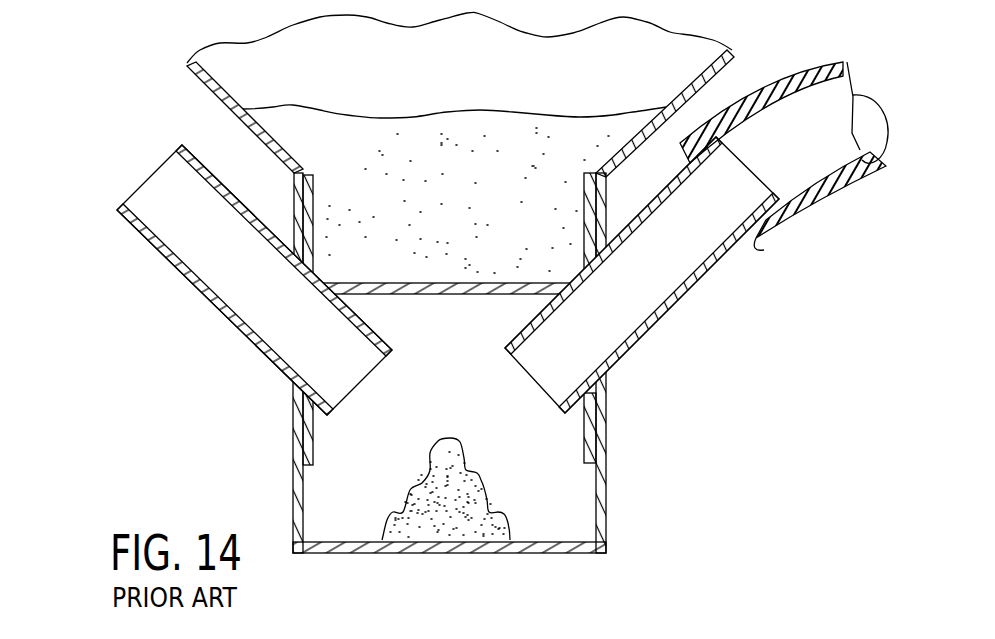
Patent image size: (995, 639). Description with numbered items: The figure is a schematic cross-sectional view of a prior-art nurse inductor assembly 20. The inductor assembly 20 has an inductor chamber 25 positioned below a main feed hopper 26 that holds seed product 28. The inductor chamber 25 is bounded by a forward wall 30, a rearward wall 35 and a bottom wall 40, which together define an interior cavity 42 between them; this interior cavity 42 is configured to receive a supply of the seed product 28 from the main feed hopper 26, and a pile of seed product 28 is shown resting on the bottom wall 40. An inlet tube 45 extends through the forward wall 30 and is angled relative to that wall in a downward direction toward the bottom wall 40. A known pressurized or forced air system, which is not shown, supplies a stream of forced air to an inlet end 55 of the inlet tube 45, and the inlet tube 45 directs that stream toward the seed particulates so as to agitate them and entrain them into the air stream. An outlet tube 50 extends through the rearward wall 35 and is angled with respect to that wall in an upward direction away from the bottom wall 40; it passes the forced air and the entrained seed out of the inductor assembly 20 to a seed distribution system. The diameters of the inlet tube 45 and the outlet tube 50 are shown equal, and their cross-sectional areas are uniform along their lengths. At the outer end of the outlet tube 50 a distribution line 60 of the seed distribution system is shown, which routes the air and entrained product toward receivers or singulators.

The nurse inductor assembly 20 is at (766, 72).
The inductor chamber 25 is at (462, 450).
The main feed hopper 26 is at (215, 92).
The seed product 28 is at (467, 197).
The forward wall 30 is at (291, 467).
The rearward wall 35 is at (607, 515).
The bottom wall 40 is at (447, 554).
The interior cavity 42 is at (550, 457).
The inlet tube 45 is at (222, 312).
The outlet tube 50 is at (677, 307).
The inlet end 55 is at (226, 280).
The distribution line 60 is at (847, 178).